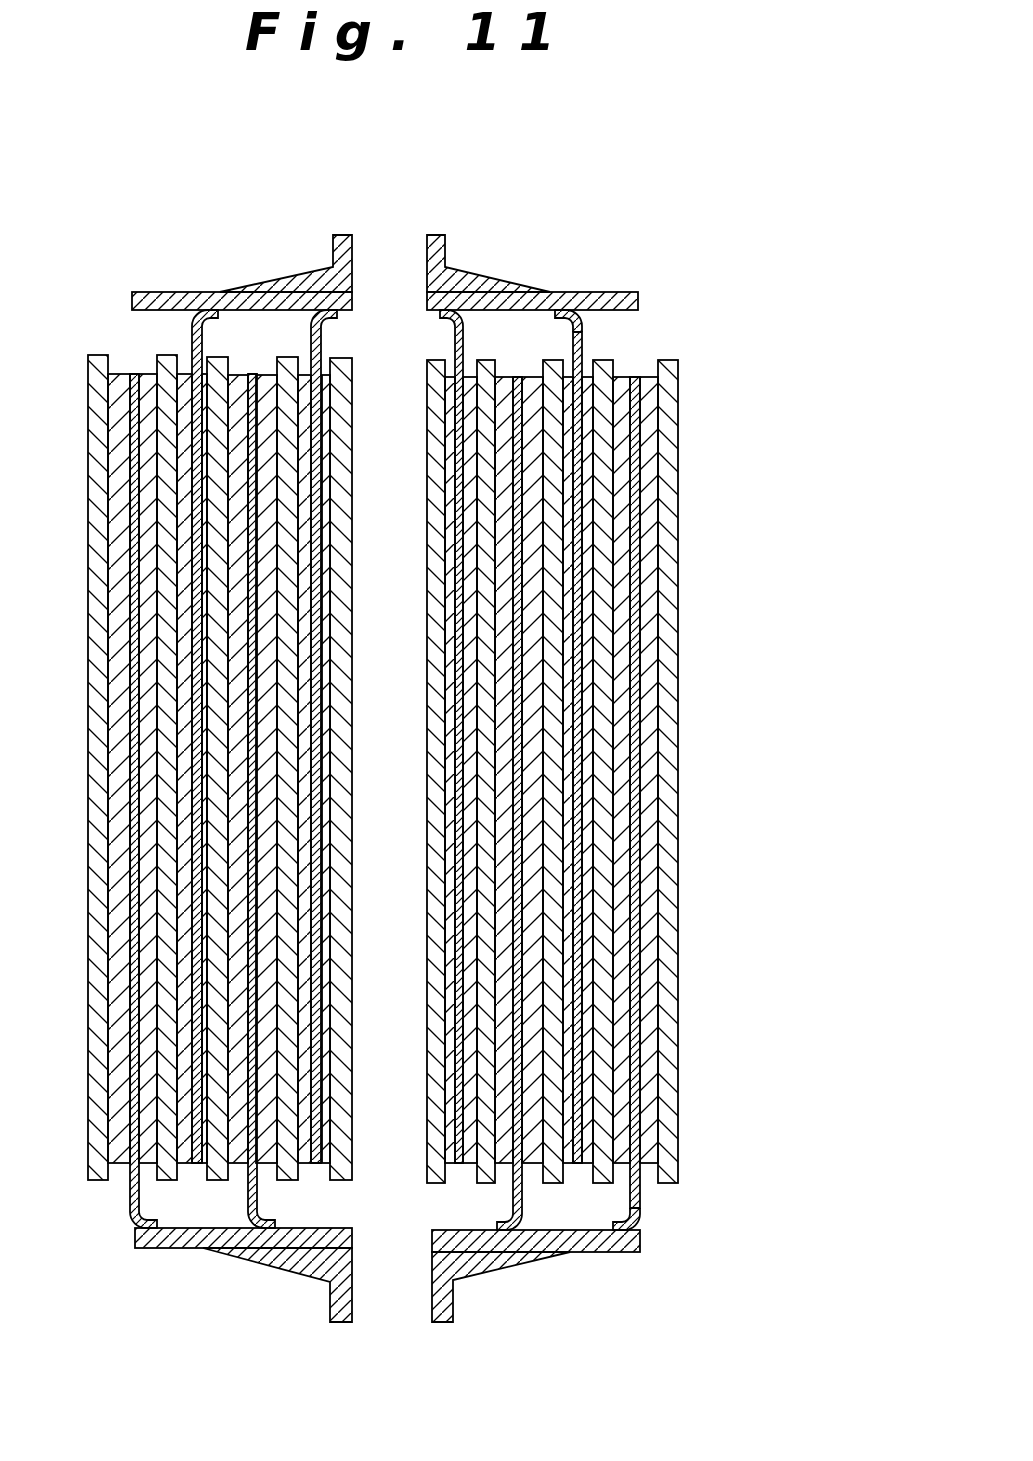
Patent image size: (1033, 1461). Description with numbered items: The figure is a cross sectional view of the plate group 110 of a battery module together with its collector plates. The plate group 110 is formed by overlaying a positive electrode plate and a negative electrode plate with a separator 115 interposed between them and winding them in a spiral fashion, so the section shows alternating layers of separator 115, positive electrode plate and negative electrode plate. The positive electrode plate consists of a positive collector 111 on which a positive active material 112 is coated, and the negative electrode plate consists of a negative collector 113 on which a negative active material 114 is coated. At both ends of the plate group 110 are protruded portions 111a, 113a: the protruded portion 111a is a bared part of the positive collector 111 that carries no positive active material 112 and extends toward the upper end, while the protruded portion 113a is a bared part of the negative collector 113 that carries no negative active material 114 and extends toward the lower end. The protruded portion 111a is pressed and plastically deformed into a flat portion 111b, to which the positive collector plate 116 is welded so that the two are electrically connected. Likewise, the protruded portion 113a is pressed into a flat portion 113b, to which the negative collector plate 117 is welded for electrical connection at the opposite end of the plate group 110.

The plate group 110 is at (470, 779).
The positive collector 111 is at (513, 721).
The protruded portion 111a is at (582, 345).
The flat portion 111b is at (587, 320).
The positive active material 112 is at (588, 1013).
The negative collector 113 is at (490, 827).
The protruded portion 113a is at (645, 1198).
The flat portion 113b is at (637, 1228).
The negative active material 114 is at (647, 725).
The separator 115 is at (603, 803).
The positive collector plate 116 is at (598, 300).
The negative collector plate 117 is at (187, 1238).